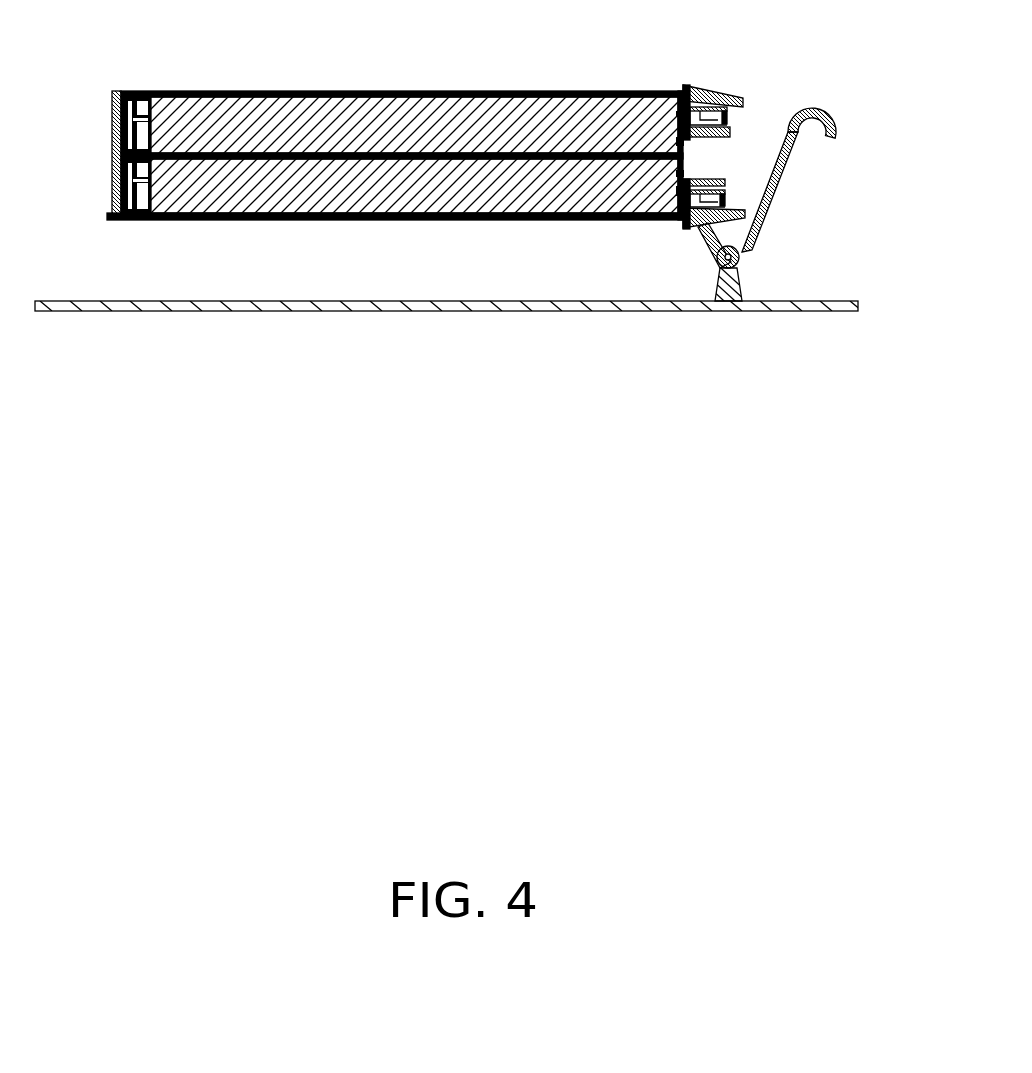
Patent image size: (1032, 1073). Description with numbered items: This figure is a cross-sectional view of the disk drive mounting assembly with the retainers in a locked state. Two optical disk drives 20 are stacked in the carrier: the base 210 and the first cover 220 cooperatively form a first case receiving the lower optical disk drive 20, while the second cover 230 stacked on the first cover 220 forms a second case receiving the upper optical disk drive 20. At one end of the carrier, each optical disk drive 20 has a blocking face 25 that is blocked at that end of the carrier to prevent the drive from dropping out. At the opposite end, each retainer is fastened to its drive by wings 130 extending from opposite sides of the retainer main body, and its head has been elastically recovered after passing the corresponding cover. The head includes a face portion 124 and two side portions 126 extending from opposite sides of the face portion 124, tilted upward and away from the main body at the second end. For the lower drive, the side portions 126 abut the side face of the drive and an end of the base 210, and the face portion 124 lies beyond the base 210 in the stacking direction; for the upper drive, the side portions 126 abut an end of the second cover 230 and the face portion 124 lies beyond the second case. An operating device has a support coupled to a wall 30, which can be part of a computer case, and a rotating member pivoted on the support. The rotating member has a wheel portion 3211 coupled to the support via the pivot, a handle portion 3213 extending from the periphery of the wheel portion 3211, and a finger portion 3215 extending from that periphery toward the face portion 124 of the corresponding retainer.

The optical disk drive 20 is at (236, 128).
The blocking face 25 is at (93, 96).
The base 210 is at (305, 223).
The first cover 220 is at (335, 152).
The second cover 230 is at (399, 91).
The face portion 124 is at (707, 93).
The side portion 126 is at (672, 97).
The wing 130 is at (723, 123).
The handle portion 3213 is at (790, 160).
The finger portion 3215 is at (703, 238).
The wheel portion 3211 is at (713, 272).
The wall 30 is at (450, 308).